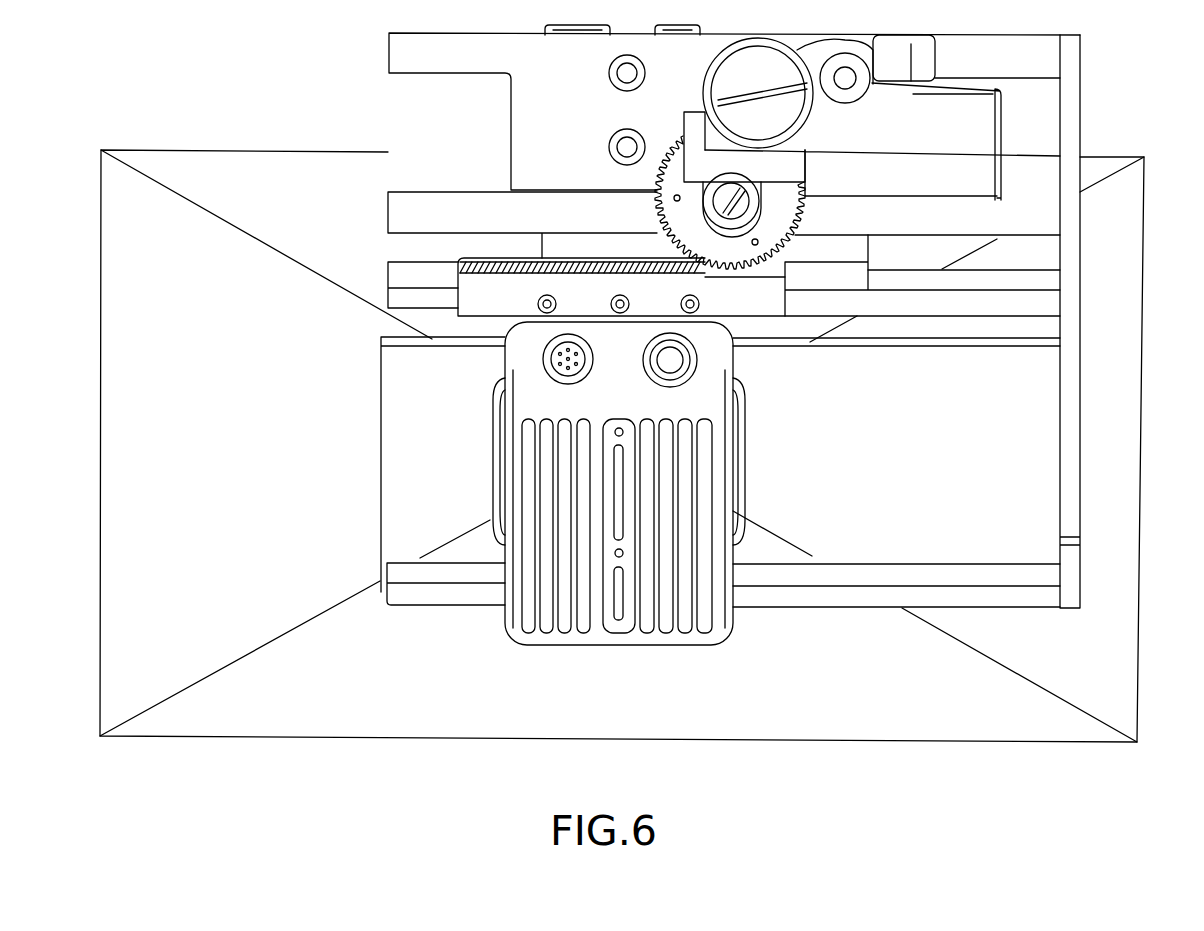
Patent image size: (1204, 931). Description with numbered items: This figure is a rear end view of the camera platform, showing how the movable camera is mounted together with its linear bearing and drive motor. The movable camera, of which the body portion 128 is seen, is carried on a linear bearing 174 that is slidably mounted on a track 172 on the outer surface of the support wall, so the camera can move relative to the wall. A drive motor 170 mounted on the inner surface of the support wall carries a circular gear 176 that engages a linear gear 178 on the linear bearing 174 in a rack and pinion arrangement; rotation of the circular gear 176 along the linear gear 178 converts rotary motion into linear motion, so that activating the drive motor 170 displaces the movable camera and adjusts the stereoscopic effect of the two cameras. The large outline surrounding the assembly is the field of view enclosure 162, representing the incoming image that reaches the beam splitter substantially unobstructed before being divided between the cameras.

The body portion 128 is at (733, 370).
The field of view enclosure 162 is at (622, 446).
The drive motor 170 is at (980, 123).
The track 172 is at (836, 290).
The linear bearing 174 is at (768, 313).
The circular gear 176 is at (785, 210).
The linear gear 178 is at (490, 262).